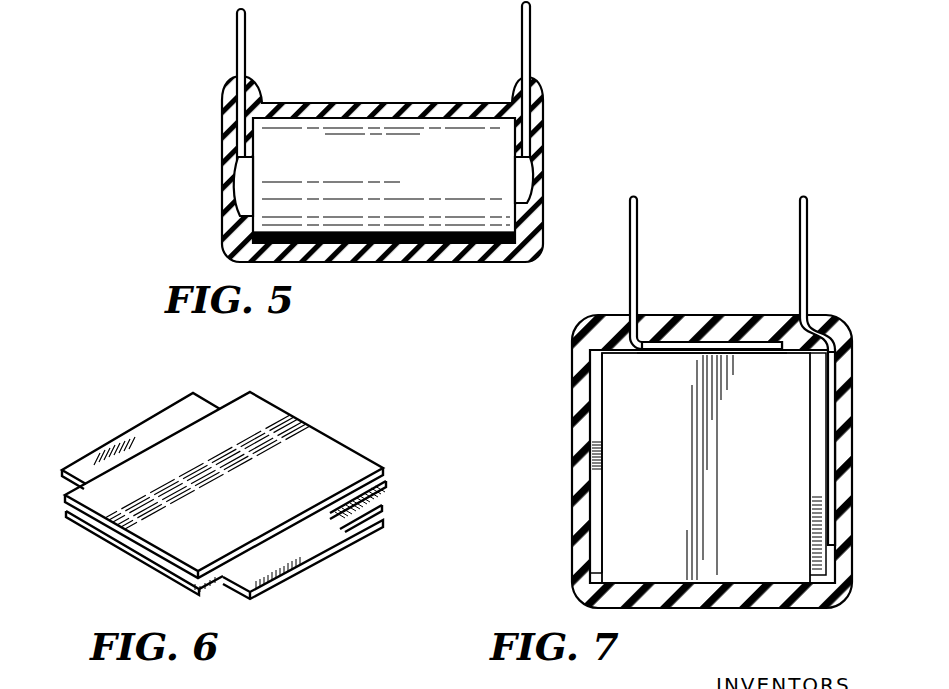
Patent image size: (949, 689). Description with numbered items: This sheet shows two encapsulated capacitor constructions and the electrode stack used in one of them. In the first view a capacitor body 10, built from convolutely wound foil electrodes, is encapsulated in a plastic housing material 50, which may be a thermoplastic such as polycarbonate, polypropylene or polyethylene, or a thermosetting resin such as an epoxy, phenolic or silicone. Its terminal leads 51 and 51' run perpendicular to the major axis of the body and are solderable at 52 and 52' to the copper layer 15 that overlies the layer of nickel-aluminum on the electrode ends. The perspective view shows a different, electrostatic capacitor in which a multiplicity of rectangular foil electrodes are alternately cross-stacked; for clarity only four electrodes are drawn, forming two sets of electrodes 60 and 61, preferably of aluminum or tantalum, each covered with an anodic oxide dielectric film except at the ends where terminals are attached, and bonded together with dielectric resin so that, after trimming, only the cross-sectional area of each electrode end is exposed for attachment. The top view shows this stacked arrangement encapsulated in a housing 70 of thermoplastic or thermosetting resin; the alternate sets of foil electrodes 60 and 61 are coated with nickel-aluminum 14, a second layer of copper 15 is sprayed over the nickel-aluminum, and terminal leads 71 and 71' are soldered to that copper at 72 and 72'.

In FIG. 5, the capacitor body 10 is at (400, 106).
In FIG. 7, the nickel-aluminum layer 14 is at (646, 353).
In FIG. 5, the copper layer 15 is at (254, 177).
In FIG. 7, the copper layer 15 is at (760, 351).
In FIG. 5, the plastic housing material 50 is at (340, 250).
In FIG. 5, the terminal lead 51 is at (269, 84).
In FIG. 5, the terminal lead 51' is at (551, 81).
In FIG. 5, the solder connection 52 is at (209, 186).
In FIG. 5, the solder connection 52' is at (552, 180).
In FIG. 6, the first set of foil electrodes 60 is at (318, 523).
In FIG. 7, the first set of foil electrodes 60 is at (666, 484).
In FIG. 6, the second set of foil electrodes 61 is at (155, 523).
In FIG. 7, the second set of foil electrodes 61 is at (594, 521).
In FIG. 7, the housing 70 is at (680, 608).
In FIG. 7, the terminal lead 71 is at (706, 273).
In FIG. 7, the terminal lead 71' is at (831, 371).
In FIG. 7, the solder joint 72 is at (712, 316).
In FIG. 7, the solder joint 72' is at (862, 448).